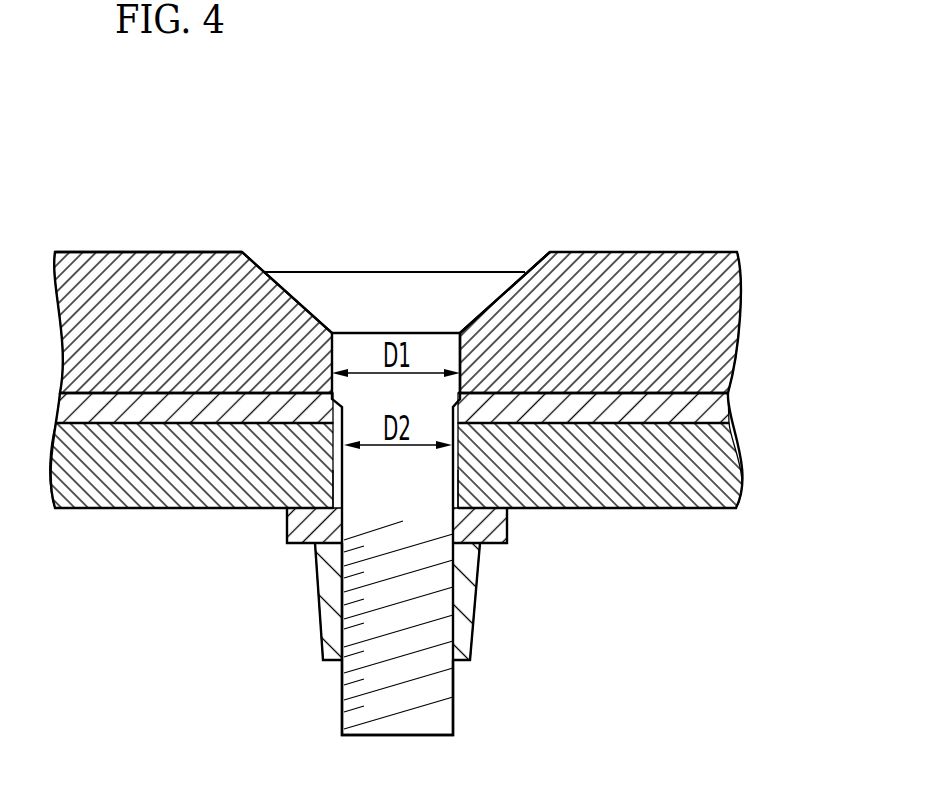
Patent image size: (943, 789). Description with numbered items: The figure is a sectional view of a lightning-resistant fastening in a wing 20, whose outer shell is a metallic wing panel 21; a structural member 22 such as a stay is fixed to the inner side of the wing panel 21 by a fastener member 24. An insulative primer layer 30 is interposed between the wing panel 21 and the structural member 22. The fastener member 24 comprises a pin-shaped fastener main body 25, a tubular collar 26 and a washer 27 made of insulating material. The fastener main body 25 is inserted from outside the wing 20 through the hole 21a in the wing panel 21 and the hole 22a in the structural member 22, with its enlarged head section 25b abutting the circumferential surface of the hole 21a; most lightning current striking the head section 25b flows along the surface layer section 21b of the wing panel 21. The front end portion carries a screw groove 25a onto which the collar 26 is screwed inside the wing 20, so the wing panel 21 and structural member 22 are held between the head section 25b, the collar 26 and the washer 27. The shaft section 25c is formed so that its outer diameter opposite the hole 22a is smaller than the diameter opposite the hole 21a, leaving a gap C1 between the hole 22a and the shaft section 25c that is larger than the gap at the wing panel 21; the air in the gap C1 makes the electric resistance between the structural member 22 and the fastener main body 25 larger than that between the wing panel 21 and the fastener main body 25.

The wing 20 is at (680, 178).
The wing panel 21 is at (722, 345).
The hole 21a is at (450, 349).
The surface layer section 21b is at (162, 258).
The structural member 22 is at (722, 480).
The hole 22a is at (460, 497).
The fastener member 24 is at (412, 243).
The fastener main body 25 is at (437, 707).
The screw groove 25a is at (342, 703).
The head section 25b is at (320, 282).
The shaft section 25c is at (327, 645).
The collar 26 is at (477, 610).
The washer 27 is at (507, 530).
The insulative primer layer 30 is at (722, 408).
The gap C1 is at (333, 462).